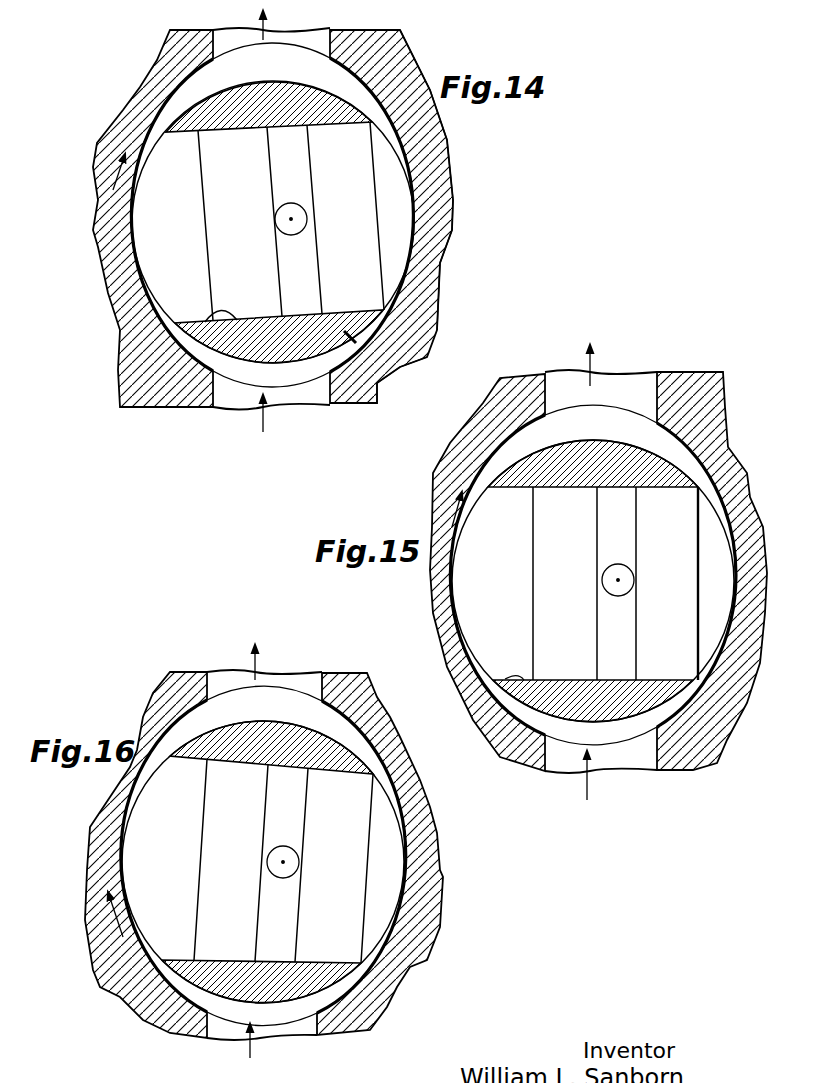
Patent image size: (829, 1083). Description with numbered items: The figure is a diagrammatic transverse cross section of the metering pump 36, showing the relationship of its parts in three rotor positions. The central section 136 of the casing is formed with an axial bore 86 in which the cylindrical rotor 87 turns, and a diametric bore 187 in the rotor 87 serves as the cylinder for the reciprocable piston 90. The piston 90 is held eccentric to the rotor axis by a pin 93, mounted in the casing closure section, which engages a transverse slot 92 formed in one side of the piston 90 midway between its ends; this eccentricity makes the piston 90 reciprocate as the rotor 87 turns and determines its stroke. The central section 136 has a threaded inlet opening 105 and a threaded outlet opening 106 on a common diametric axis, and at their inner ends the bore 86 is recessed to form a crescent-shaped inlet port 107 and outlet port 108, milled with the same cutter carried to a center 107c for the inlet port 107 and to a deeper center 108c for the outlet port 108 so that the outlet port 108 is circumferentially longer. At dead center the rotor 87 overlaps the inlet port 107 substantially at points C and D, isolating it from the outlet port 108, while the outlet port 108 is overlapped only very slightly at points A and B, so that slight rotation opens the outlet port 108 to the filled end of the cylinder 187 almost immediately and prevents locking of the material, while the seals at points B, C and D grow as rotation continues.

In FIG. 14, the pump 36 is at (150, 412).
In FIG. 15, the pump 36 is at (520, 752).
In FIG. 16, the pump 36 is at (163, 690).
In FIG. 14, the axial bore 86 is at (402, 252).
In FIG. 15, the axial bore 86 is at (726, 531).
In FIG. 16, the axial bore 86 is at (263, 856).
In FIG. 14, the rotor 87 is at (369, 345).
In FIG. 15, the rotor 87 is at (672, 737).
In FIG. 16, the rotor 87 is at (380, 854).
In FIG. 14, the piston 90 is at (362, 166).
In FIG. 15, the piston 90 is at (683, 515).
In FIG. 16, the piston 90 is at (364, 822).
In FIG. 14, the transverse slot 92 is at (304, 173).
In FIG. 15, the transverse slot 92 is at (636, 614).
In FIG. 16, the transverse slot 92 is at (302, 795).
In FIG. 14, the pin 93 is at (283, 235).
In FIG. 15, the pin 93 is at (633, 570).
In FIG. 16, the pin 93 is at (288, 880).
In FIG. 14, the threaded inlet opening 105 is at (335, 405).
In FIG. 14, the threaded outlet opening 106 is at (315, 31).
In FIG. 14, the inlet port 107 is at (296, 388).
In FIG. 15, the inlet port 107 is at (640, 730).
In FIG. 16, the inlet port 107 is at (298, 1007).
In FIG. 15, the center 107c is at (600, 640).
In FIG. 15, the outlet port 108 is at (676, 430).
In FIG. 16, the outlet port 108 is at (325, 718).
In FIG. 15, the center 108c is at (598, 515).
In FIG. 14, the central section 136 is at (418, 321).
In FIG. 14, the diametric bore 187 is at (239, 325).
In FIG. 15, the diametric bore 187 is at (518, 678).
In FIG. 15, the point A is at (494, 486).
In FIG. 14, the point B is at (378, 124).
In FIG. 15, the point B is at (700, 485).
In FIG. 16, the point B is at (376, 774).
In FIG. 15, the point C is at (694, 682).
In FIG. 16, the point C is at (362, 963).
In FIG. 14, the point D is at (178, 325).
In FIG. 15, the point D is at (498, 684).
In FIG. 16, the point D is at (160, 962).